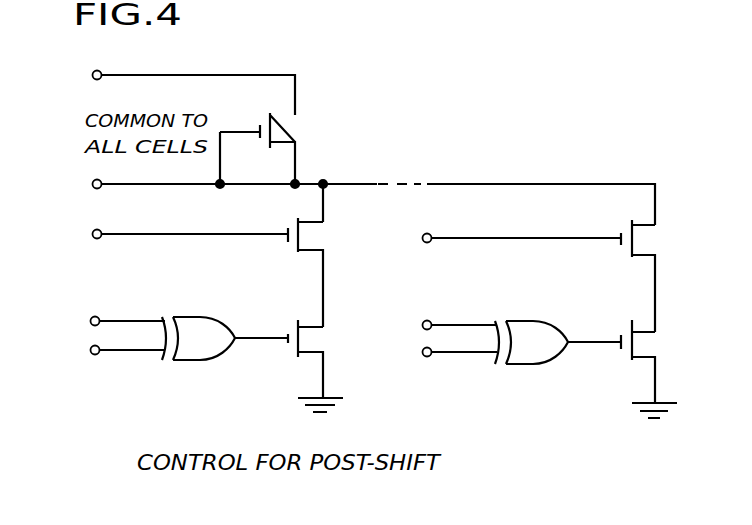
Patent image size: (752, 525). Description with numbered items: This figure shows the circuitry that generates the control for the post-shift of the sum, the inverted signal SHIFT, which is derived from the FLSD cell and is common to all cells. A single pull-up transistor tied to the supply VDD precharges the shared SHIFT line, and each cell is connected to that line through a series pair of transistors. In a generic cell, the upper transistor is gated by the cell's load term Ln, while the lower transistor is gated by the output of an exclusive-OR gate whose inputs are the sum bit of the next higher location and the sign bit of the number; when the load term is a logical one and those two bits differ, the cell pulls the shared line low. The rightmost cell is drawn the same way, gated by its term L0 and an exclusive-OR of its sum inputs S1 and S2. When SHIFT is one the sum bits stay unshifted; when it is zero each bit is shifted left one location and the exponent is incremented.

The supply voltage terminal VDD is at (169, 86).
The post-shift control signal SHIFT is at (82, 166).
The L term of cell n Ln is at (171, 232).
The cell 0 load input L0 is at (522, 222).
The shift input 1 S1 is at (442, 319).
The shift input 2 S2 is at (442, 347).